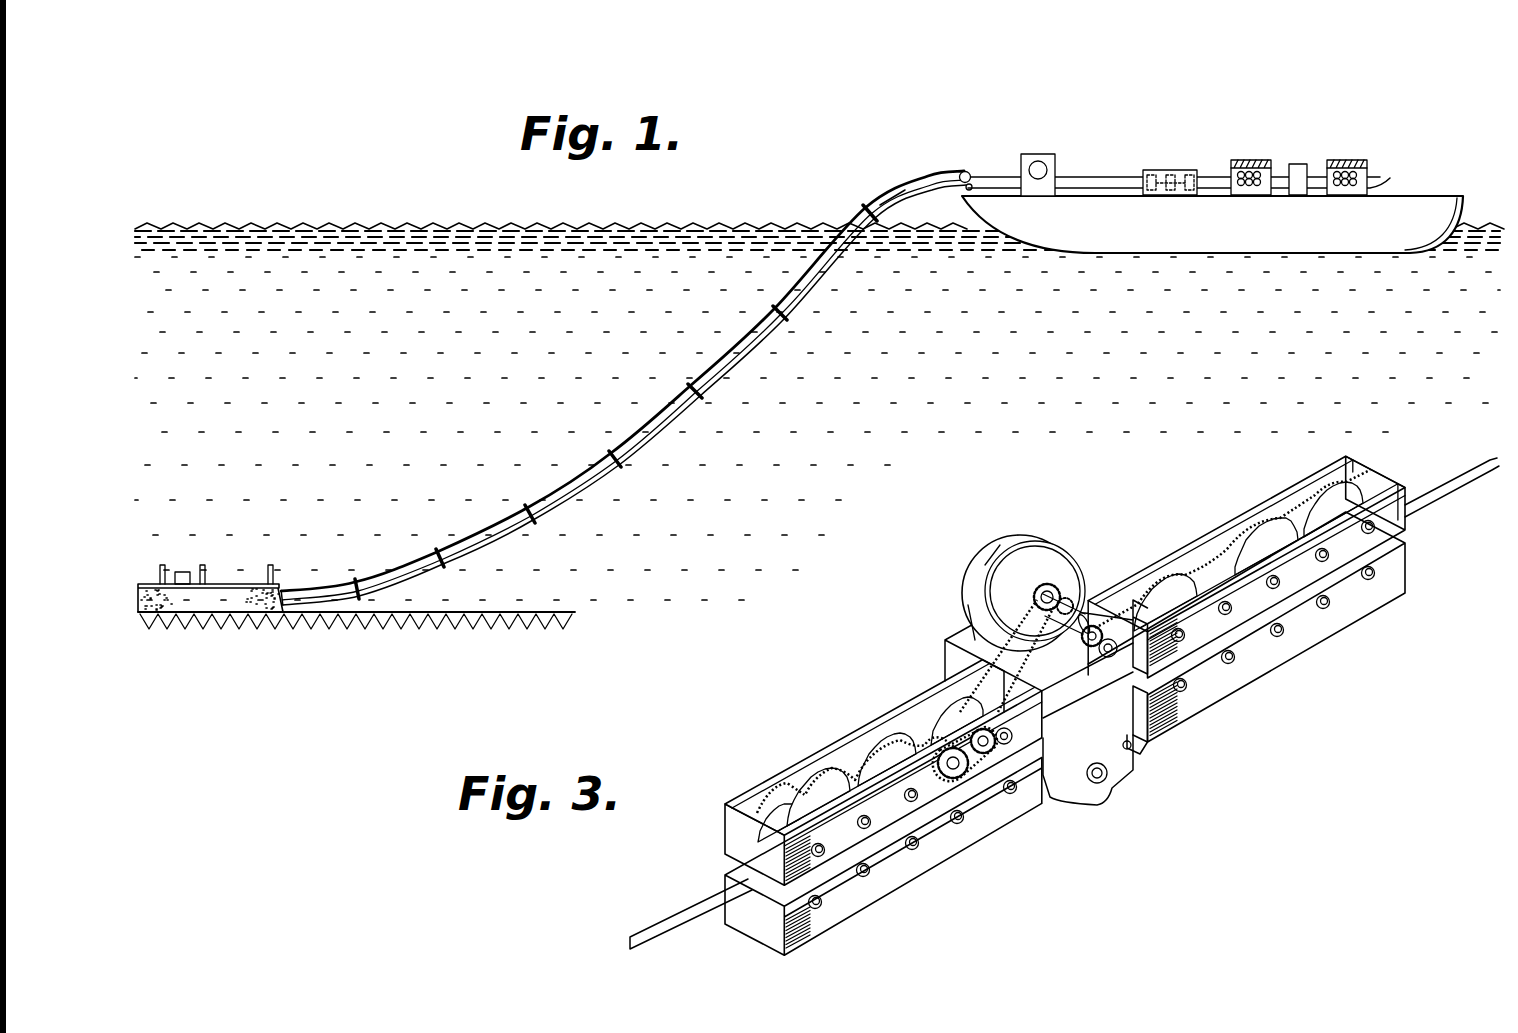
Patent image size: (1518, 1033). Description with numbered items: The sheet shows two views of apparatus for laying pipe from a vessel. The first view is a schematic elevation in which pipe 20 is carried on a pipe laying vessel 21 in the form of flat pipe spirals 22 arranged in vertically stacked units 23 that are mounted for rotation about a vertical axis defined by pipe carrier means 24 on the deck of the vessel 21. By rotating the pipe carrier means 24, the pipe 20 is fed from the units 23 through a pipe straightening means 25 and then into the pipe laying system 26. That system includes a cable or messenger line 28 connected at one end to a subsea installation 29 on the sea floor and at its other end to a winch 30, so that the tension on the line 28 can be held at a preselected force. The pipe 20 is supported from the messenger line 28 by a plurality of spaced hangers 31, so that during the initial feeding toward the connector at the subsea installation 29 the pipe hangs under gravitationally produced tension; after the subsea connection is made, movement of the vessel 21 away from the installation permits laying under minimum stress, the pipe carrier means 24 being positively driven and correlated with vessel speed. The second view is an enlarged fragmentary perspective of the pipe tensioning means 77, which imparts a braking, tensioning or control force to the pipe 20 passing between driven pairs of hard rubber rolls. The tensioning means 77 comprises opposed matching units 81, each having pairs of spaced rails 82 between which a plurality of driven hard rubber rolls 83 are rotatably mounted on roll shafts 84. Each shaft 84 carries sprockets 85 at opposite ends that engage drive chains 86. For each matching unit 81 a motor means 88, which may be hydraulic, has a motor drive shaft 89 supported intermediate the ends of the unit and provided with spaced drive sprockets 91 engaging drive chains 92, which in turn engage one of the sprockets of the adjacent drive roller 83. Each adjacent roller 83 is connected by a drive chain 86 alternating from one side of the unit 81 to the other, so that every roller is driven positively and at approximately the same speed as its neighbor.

In FIG. 1, the pipe 20 is at (335, 600).
In FIG. 3, the pipe 20 is at (648, 935).
In FIG. 1, the pipe laying vessel 21 is at (1297, 222).
In FIG. 1, the flat pipe spirals 22 is at (1370, 178).
In FIG. 1, the vertically stacked units 23 is at (1224, 166).
In FIG. 1, the pipe carrier means 24 is at (1308, 158).
In FIG. 1, the pipe straightening means 25 is at (1170, 160).
In FIG. 1, the pipe laying system 26 is at (978, 163).
In FIG. 1, the messenger line 28 is at (890, 195).
In FIG. 1, the subsea installation 29 is at (228, 598).
In FIG. 1, the winch 30 is at (1040, 165).
In FIG. 1, the hangers 31 is at (775, 330).
In FIG. 3, the pipe tensioning means 77 is at (1102, 558).
In FIG. 3, the matching units 81 is at (1065, 689).
In FIG. 3, the spaced rails 82 is at (1375, 490).
In FIG. 3, the driven hard rubber rolls 83 is at (830, 787).
In FIG. 3, the roll shafts 84 is at (818, 852).
In FIG. 3, the sprockets 85 is at (898, 745).
In FIG. 3, the drive chains 86 is at (853, 757).
In FIG. 3, the motor means 88 is at (1005, 545).
In FIG. 3, the motor drive shaft 89 is at (1114, 650).
In FIG. 3, the drive sprockets 91 is at (1010, 630).
In FIG. 3, the drive chains 92 is at (1068, 598).